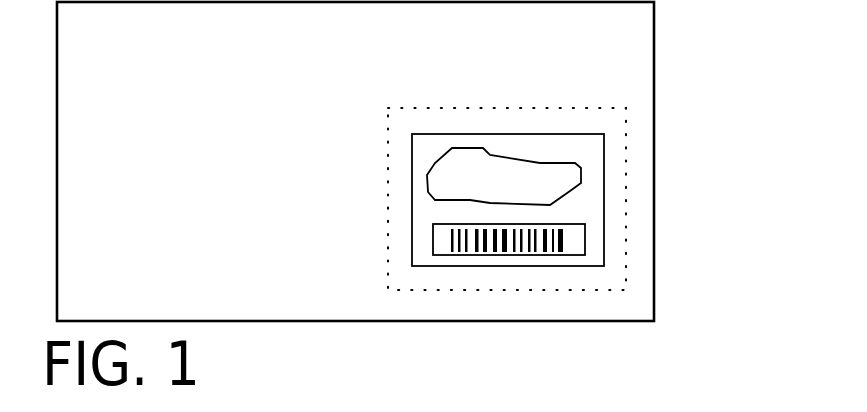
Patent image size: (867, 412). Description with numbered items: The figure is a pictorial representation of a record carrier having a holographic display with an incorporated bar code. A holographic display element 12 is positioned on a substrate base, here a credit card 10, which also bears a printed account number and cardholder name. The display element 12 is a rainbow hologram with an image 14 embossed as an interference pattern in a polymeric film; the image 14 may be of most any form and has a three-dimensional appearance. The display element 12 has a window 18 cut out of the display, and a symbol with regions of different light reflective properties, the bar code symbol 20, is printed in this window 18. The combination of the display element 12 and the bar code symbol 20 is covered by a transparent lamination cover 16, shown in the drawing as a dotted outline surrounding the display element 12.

The credit card 10 is at (654, 74).
The holographic display element 12 is at (605, 215).
The image 14 is at (566, 182).
The transparent lamination cover 16 is at (626, 265).
The window 18 is at (554, 255).
The bar code symbol 20 is at (487, 248).